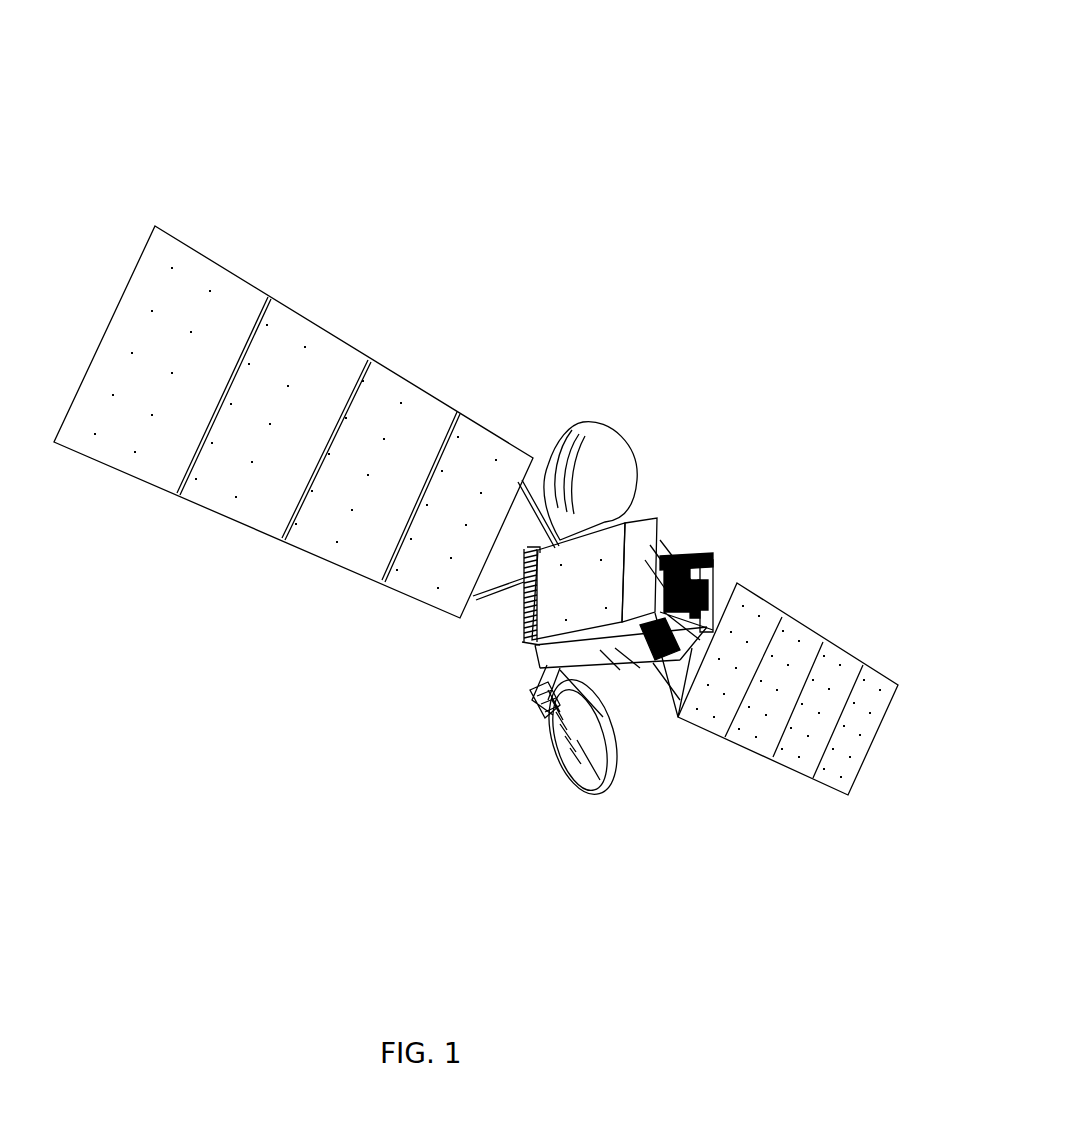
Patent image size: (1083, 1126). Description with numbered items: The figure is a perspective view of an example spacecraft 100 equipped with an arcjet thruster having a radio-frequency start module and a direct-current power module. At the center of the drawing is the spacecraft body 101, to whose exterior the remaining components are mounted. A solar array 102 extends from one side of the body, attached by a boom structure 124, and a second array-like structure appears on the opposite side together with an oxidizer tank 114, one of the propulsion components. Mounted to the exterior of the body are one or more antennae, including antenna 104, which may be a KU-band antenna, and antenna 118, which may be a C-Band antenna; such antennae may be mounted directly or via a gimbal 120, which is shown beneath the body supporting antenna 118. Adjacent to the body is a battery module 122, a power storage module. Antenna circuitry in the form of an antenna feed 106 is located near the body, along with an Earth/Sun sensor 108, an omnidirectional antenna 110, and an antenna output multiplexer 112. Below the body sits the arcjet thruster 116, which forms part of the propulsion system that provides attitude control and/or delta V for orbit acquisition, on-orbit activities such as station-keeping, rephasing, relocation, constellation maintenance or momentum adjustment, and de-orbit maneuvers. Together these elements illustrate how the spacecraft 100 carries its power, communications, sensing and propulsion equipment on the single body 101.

The spacecraft 100 is at (672, 136).
The spacecraft body 101 is at (658, 509).
The solar array 102 is at (258, 470).
The antenna 104 is at (592, 448).
The antenna feed 106 is at (670, 547).
The Earth/Sun sensor 108 is at (692, 560).
The omnidirectional antenna 110 is at (693, 573).
The antenna output multiplexer 112 is at (718, 568).
The oxidizer tank 114 is at (677, 720).
The arcjet thruster 116 is at (630, 667).
The antenna 118 is at (598, 795).
The gimbal 120 is at (530, 700).
The battery module 122 is at (527, 637).
The boom structure 124 is at (500, 593).